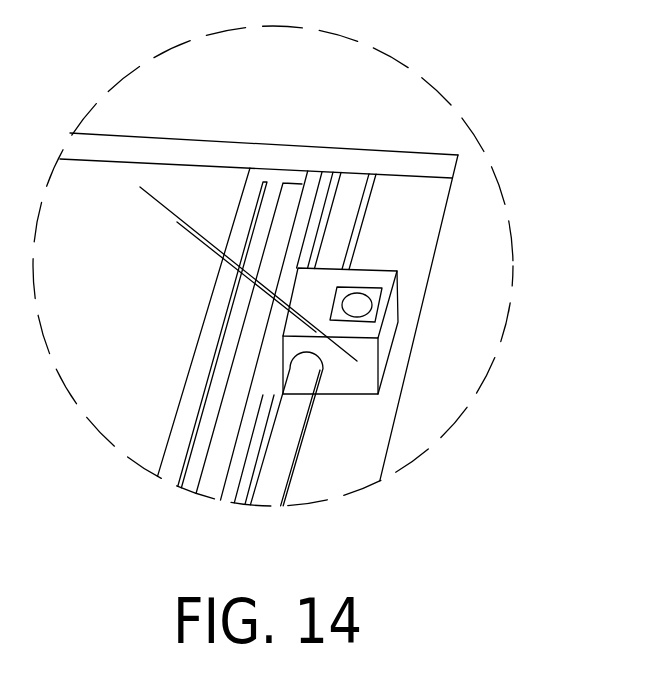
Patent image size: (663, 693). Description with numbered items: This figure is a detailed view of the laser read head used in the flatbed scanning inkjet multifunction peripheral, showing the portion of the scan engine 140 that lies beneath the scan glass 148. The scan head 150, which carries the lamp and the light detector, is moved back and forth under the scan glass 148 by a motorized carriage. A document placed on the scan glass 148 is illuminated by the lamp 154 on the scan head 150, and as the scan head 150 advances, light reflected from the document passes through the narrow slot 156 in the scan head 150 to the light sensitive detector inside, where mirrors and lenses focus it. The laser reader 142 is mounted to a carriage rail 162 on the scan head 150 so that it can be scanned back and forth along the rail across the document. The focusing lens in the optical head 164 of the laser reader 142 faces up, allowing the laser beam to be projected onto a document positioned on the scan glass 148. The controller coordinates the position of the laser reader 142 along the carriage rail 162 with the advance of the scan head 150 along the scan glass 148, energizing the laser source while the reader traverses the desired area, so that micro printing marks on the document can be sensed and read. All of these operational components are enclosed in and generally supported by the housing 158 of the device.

The scan engine 140 is at (473, 240).
The laser reader 142 is at (387, 332).
The scan glass 148 is at (191, 187).
The scan head 150 is at (190, 385).
The lamp 154 is at (238, 322).
The narrow slot 156 is at (193, 423).
The housing 158 is at (347, 77).
The carriage rail 162 is at (287, 448).
The optical head 164 is at (356, 300).